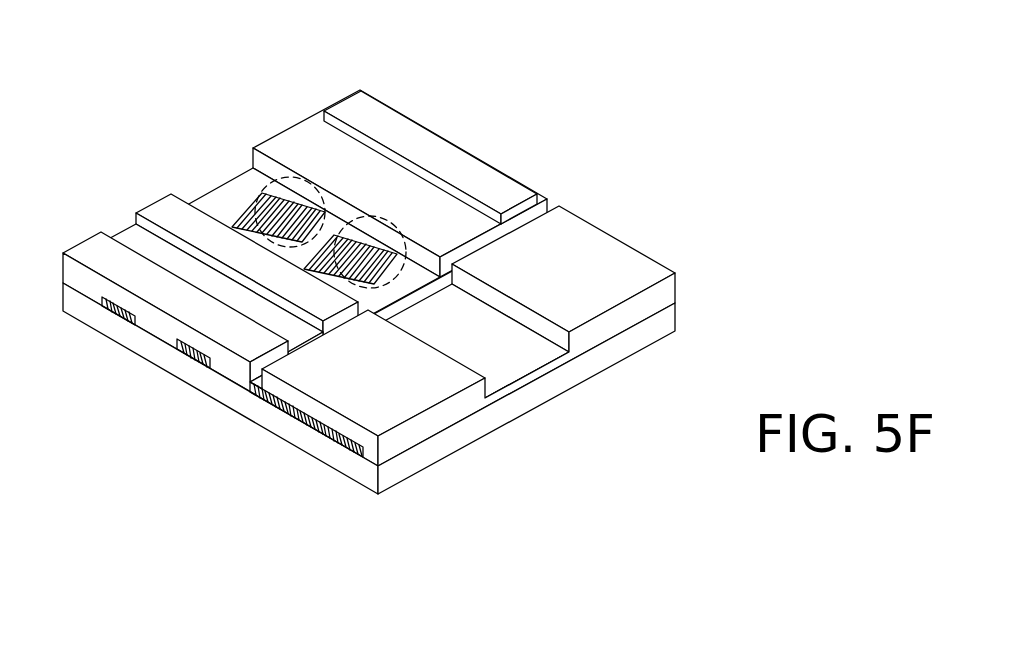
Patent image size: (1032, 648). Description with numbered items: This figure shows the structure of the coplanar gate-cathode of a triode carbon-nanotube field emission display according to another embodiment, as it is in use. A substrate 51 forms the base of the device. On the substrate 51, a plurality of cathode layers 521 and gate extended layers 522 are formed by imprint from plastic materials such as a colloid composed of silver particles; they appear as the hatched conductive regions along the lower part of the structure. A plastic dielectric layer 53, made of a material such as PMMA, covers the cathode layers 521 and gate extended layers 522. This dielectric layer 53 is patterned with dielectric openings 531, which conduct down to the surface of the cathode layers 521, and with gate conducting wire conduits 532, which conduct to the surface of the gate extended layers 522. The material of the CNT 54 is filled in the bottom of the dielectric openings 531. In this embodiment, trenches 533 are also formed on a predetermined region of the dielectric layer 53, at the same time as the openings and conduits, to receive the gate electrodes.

The substrate 51 is at (677, 316).
The plastic dielectric layer 53 is at (412, 235).
The dielectric openings 531 is at (213, 163).
The gate conducting wire conduits 532 is at (555, 193).
The trenches 533 is at (107, 223).
The CNT 54 is at (300, 180).
The cathode layers 521 is at (195, 358).
The gate extended layers 522 is at (298, 415).